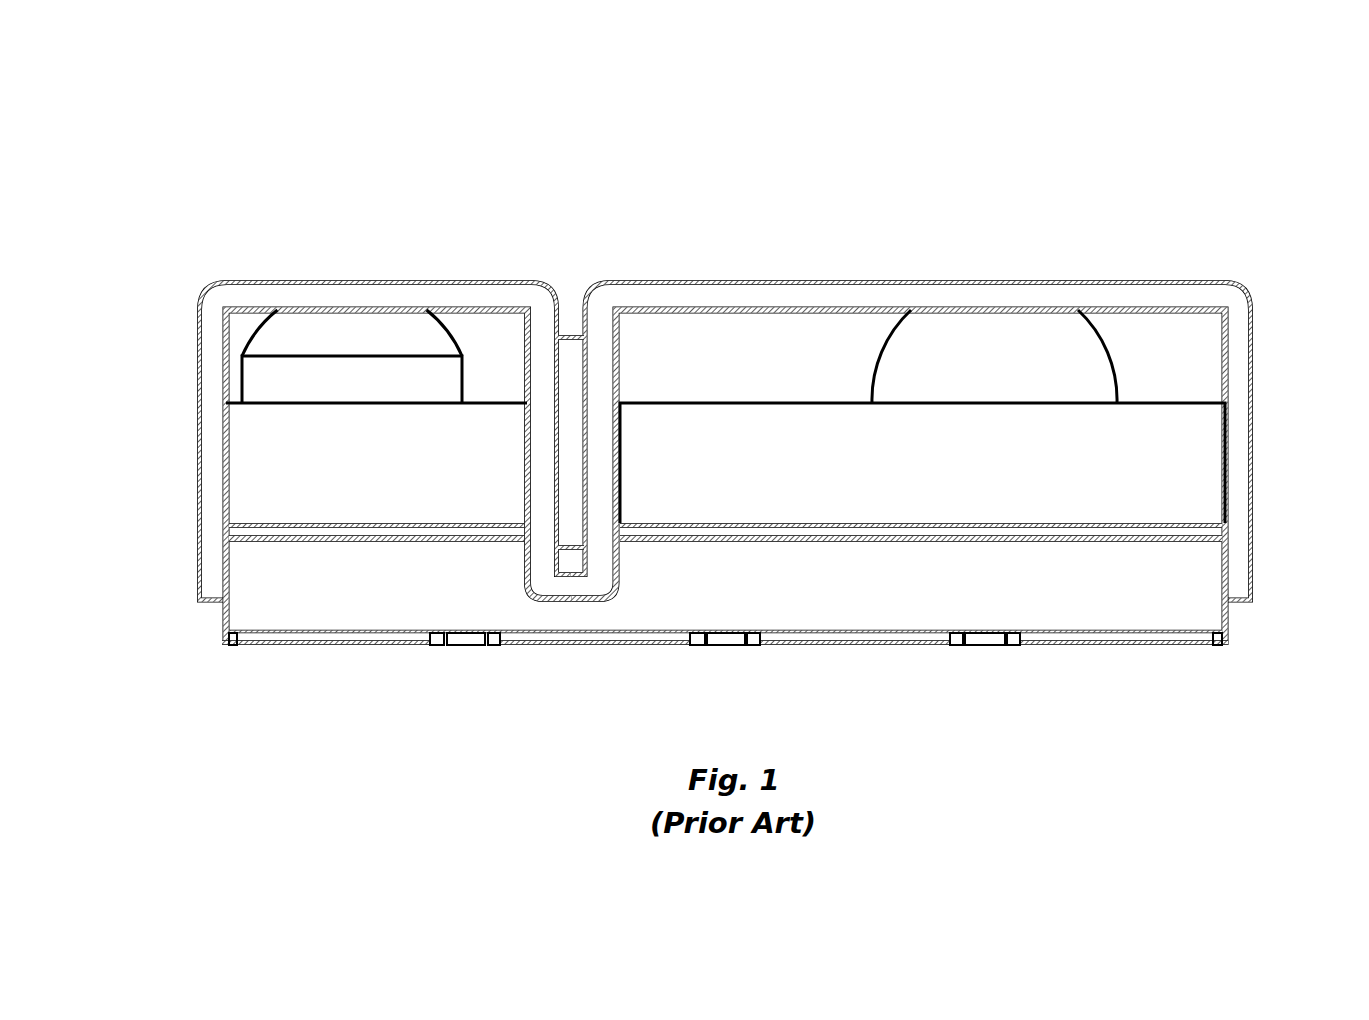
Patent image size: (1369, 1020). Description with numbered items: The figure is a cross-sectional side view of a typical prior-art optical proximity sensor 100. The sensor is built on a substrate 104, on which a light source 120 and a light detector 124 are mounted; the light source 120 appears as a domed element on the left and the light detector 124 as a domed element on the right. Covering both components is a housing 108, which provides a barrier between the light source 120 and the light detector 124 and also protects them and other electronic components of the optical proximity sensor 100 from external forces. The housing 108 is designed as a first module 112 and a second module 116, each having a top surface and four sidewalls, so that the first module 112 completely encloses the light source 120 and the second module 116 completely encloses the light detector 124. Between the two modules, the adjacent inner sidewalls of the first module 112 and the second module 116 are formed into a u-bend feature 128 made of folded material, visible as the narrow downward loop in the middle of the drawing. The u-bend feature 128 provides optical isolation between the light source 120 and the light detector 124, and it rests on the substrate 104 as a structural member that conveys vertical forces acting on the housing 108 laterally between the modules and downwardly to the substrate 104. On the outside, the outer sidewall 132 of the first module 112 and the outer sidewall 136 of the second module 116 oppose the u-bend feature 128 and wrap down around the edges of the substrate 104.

The optical proximity sensor 100 is at (1108, 178).
The substrate 104 is at (1227, 645).
The housing 108 is at (157, 344).
The first module 112 is at (320, 287).
The second module 116 is at (862, 287).
The light source 120 is at (372, 323).
The light detector 124 is at (1000, 330).
The u-bend feature 128 is at (573, 611).
The outer sidewall of the first module 132 is at (212, 522).
The outer sidewall of the second module 136 is at (1235, 522).